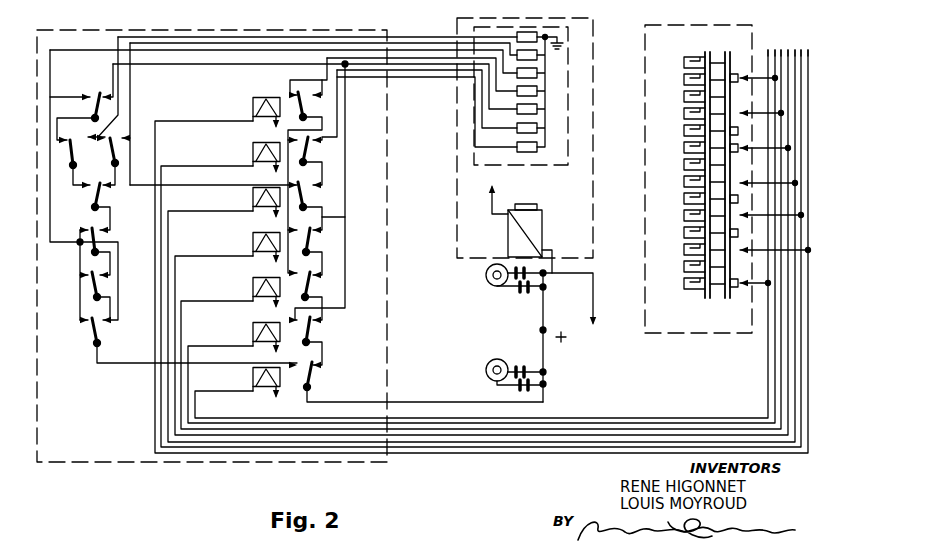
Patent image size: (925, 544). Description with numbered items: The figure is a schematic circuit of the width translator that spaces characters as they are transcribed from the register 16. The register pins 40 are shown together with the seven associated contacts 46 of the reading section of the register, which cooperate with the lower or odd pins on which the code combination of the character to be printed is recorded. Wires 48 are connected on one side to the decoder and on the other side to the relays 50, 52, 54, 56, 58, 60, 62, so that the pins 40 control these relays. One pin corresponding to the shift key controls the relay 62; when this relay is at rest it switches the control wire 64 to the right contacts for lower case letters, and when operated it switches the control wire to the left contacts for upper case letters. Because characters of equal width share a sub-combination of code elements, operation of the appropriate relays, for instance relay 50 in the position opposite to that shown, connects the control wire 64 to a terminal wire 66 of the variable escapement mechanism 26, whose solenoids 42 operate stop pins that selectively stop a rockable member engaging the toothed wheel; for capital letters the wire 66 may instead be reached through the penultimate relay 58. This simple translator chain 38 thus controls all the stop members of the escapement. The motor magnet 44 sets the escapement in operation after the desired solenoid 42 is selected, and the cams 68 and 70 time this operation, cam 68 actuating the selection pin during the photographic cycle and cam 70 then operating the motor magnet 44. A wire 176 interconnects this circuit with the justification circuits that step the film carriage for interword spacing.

The register 16 is at (662, 333).
The variable escapement mechanism 26 is at (457, 156).
The translator chain 38 is at (100, 462).
The register pins 40 is at (708, 50).
The solenoids 42 is at (548, 165).
The motor magnet 44 is at (544, 222).
The contacts 46 is at (764, 180).
The wires 48 is at (812, 46).
The relay 50 is at (481, 236).
The relay 52 is at (481, 239).
The relay 54 is at (481, 242).
The relay 56 is at (462, 246).
The relay 58 is at (481, 248).
The relay 60 is at (481, 251).
The relay 62 is at (481, 234).
The control wire 64 is at (545, 348).
The terminal wire 66 is at (416, 68).
The cam 68 is at (484, 375).
The cam 70 is at (488, 287).
The wire 176 is at (594, 296).